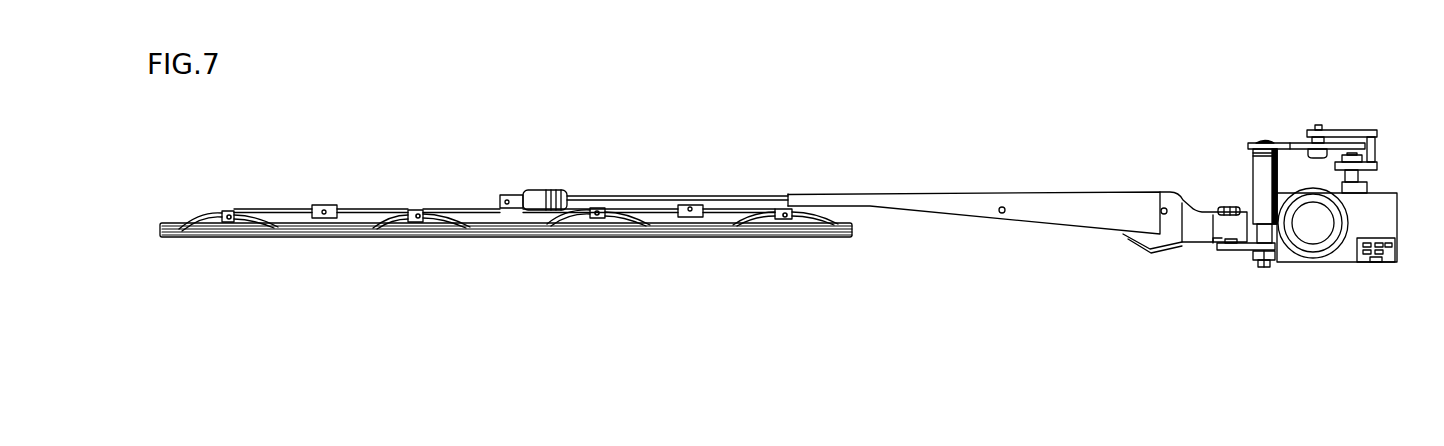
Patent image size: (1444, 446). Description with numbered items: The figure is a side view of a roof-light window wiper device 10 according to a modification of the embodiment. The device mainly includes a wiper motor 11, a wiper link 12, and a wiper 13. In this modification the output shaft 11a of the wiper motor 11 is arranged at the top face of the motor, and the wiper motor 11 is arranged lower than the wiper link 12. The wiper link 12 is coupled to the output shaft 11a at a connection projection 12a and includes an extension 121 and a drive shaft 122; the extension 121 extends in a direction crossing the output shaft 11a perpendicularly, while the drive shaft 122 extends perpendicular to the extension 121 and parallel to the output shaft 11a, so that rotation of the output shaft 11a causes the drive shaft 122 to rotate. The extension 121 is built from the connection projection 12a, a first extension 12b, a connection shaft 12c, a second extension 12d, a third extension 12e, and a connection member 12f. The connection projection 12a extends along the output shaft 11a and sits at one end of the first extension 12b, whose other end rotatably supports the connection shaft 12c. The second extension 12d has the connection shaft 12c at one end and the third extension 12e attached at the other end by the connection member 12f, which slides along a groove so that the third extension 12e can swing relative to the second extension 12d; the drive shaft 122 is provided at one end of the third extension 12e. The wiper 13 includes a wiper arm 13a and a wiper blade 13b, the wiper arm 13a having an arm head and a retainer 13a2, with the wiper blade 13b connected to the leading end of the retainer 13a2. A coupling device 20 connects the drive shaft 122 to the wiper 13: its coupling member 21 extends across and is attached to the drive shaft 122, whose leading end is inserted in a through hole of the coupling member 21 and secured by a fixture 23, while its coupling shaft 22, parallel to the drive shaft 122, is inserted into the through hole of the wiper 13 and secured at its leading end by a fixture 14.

The roof-light window wiper device 10 is at (912, 128).
The wiper motor 11 is at (1347, 253).
The output shaft 11a is at (1367, 187).
The wiper link 12 is at (1257, 178).
The extension 121 is at (1283, 143).
The drive shaft 122 is at (1263, 167).
The connection projection 12a is at (1358, 175).
The first extension 12b is at (1376, 165).
The connection shaft 12c is at (1364, 135).
The second extension 12d is at (1340, 130).
The third extension 12e is at (1293, 143).
The connection member 12f is at (1318, 137).
The wiper 13 is at (1068, 214).
The wiper arm 13a is at (1022, 203).
The retainer 13a2 is at (1088, 203).
The wiper blade 13b is at (507, 238).
The fixture 14 is at (1227, 208).
The coupling device 20 is at (1223, 252).
The coupling member 21 is at (1240, 250).
The coupling shaft 22 is at (1213, 243).
The fixture 23 is at (1263, 266).